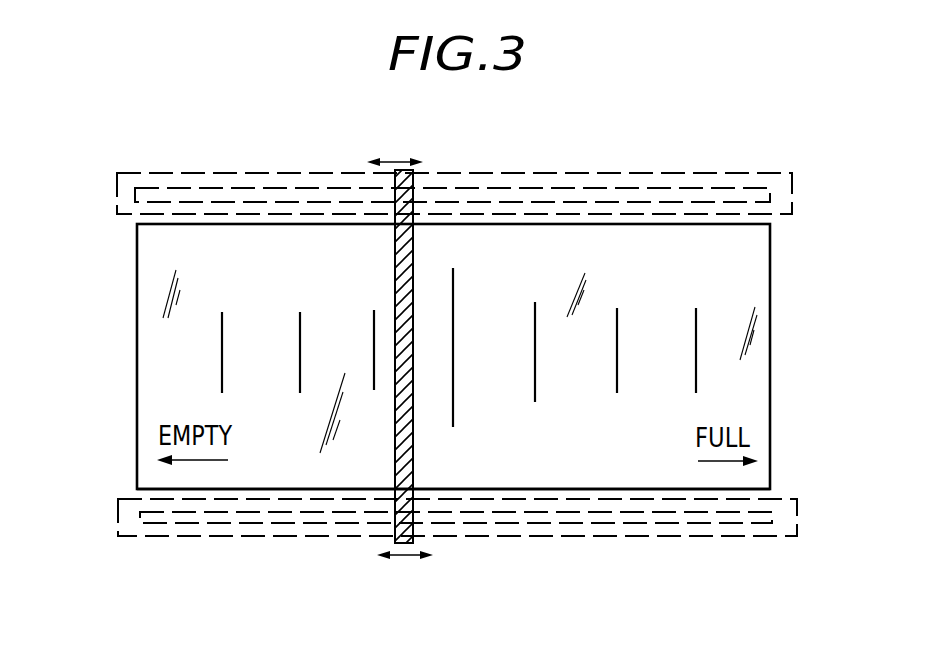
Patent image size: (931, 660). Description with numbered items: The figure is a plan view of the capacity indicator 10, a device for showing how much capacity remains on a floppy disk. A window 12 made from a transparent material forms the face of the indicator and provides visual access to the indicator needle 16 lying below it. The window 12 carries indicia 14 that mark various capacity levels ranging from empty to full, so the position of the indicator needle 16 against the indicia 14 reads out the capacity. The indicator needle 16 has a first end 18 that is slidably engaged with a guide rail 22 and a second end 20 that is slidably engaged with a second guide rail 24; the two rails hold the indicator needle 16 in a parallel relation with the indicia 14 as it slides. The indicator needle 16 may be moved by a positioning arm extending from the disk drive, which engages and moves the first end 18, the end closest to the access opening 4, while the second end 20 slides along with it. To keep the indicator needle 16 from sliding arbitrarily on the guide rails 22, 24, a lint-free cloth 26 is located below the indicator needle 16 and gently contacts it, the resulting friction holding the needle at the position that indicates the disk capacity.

The capacity indicator 10 is at (786, 268).
The window 12 is at (747, 481).
The indicia 14 is at (696, 381).
The indicator needle 16 is at (415, 467).
The first end 18 is at (428, 172).
The second end 20 is at (390, 538).
The guide rail 22 is at (503, 182).
The second guide rail 24 is at (712, 520).
The lint-free cloth 26 is at (700, 180).
The access opening 4 is at (459, 328).